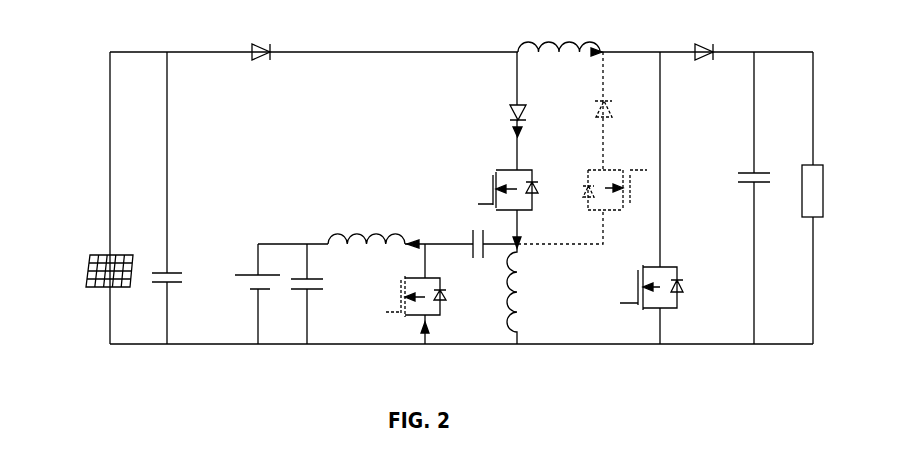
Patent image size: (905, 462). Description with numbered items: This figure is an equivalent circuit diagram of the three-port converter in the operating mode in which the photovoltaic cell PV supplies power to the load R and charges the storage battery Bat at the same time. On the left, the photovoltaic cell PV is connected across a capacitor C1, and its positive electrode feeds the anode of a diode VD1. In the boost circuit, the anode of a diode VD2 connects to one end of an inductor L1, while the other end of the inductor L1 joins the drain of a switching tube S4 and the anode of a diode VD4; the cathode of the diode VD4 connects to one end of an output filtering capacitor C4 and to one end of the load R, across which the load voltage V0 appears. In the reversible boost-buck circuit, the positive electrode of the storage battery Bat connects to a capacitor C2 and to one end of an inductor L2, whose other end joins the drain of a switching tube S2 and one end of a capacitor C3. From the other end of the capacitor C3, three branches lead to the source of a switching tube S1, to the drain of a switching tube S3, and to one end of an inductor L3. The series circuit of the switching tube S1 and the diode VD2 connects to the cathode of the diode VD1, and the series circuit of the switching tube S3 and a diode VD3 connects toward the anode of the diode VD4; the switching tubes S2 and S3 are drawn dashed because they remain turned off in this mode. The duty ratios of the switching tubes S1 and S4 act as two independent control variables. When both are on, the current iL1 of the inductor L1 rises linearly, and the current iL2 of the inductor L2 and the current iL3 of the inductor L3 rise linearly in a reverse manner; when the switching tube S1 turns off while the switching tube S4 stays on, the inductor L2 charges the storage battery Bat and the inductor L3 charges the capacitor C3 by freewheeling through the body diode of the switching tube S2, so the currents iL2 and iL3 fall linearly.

The diode VD1 is at (236, 45).
The diode VD2 is at (489, 111).
The diode VD3 is at (624, 118).
The diode VD4 is at (716, 40).
The inductor L1 is at (555, 35).
The inductor L2 is at (367, 226).
The inductor L3 is at (498, 294).
The capacitor C1 is at (159, 198).
The capacitor C2 is at (300, 294).
The capacitor C3 is at (459, 237).
The output filtering capacitor C4 is at (749, 198).
The switching tube S1 is at (503, 209).
The switching tube S2 is at (407, 294).
The switching tube S3 is at (618, 190).
The switching tube S4 is at (649, 198).
The load R is at (803, 191).
The voltage of the load V0 is at (840, 207).
The photovoltaic cell PV is at (89, 281).
The storage battery Bat is at (245, 294).
The current of the inductor L1 iL1 is at (593, 36).
The current of the inductor L2 iL2 is at (414, 229).
The current of the inductor L3 iL3 is at (528, 264).